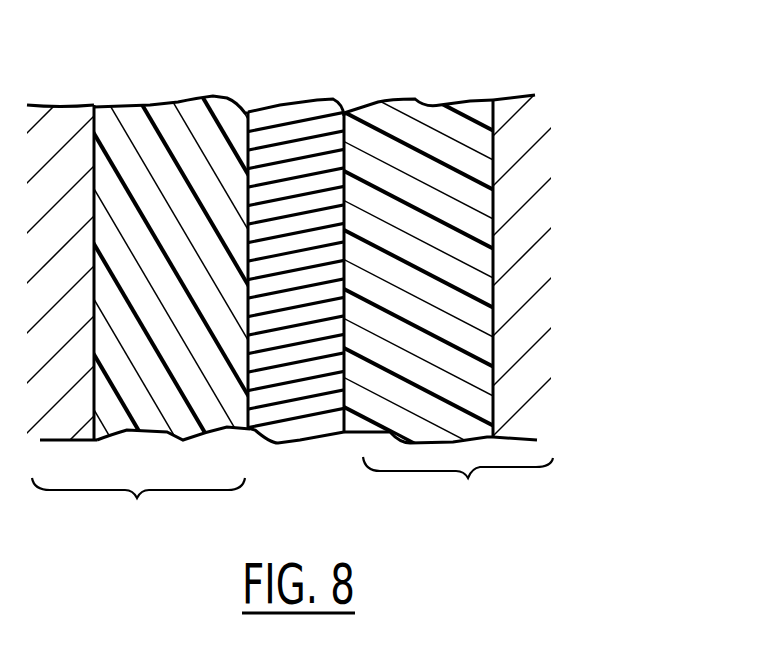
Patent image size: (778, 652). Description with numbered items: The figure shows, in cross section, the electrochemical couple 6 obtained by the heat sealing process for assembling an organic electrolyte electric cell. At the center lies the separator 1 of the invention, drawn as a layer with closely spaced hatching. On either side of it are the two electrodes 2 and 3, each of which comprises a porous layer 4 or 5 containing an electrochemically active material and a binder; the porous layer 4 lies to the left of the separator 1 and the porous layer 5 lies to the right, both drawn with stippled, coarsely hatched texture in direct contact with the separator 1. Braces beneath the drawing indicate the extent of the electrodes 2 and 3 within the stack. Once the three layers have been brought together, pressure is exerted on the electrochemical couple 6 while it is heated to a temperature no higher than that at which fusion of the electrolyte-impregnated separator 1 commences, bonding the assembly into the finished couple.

The separator 1 is at (300, 133).
The electrode 2 is at (138, 509).
The electrode 3 is at (458, 491).
The porous layer 4 is at (162, 135).
The porous layer 5 is at (424, 137).
The electrochemical couple 6 is at (581, 113).